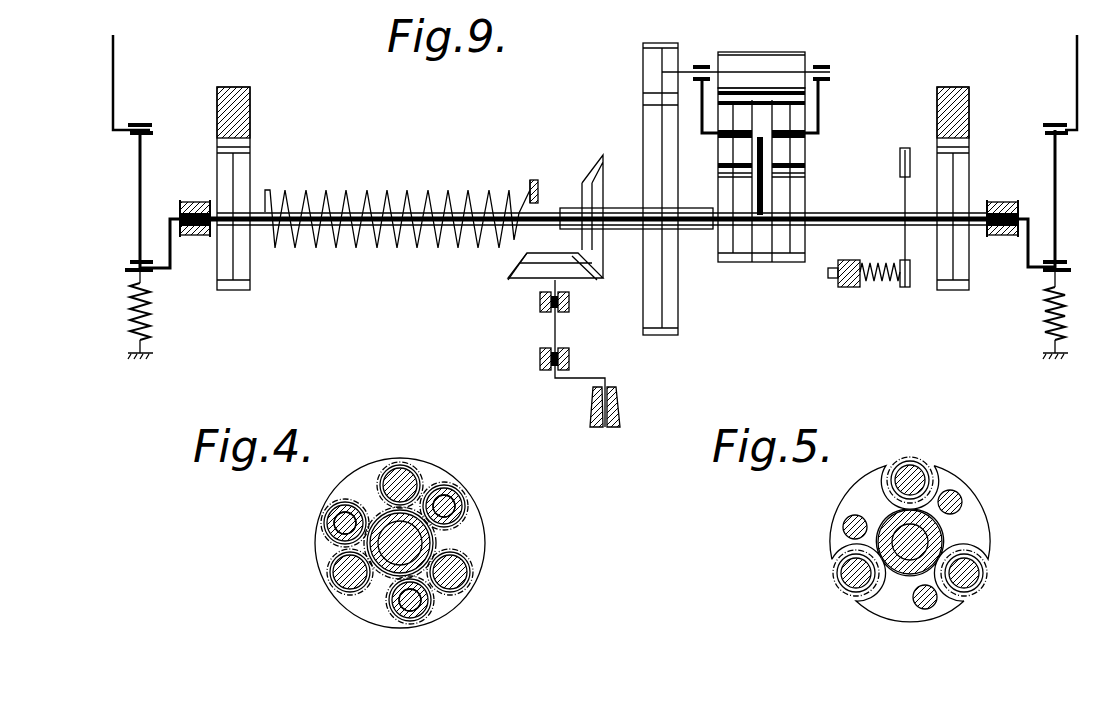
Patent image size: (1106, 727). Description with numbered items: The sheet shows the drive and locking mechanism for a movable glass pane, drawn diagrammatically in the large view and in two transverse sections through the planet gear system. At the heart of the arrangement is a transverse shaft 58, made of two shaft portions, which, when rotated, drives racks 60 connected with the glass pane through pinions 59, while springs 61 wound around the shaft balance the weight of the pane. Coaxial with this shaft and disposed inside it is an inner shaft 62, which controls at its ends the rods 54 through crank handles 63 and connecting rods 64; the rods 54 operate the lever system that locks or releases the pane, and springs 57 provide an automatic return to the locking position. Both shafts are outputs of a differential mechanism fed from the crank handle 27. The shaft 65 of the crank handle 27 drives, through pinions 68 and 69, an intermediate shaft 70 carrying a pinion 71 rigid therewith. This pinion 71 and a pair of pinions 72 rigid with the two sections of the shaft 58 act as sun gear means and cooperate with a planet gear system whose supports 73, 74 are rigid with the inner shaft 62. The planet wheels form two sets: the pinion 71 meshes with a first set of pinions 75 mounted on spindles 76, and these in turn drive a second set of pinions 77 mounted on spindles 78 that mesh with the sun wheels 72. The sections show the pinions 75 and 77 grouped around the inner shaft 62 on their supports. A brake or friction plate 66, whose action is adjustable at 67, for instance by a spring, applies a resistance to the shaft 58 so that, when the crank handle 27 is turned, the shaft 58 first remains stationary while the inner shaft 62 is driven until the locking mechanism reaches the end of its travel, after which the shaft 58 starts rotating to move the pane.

In FIG. 9, the crank handle 27 is at (621, 400).
In FIG. 9, the rod 54 is at (115, 68).
In FIG. 9, the spring 57 is at (152, 318).
In FIG. 9, the transverse shaft 58 is at (500, 195).
In FIG. 9, the pinion 59 is at (250, 150).
In FIG. 9, the rack 60 is at (250, 107).
In FIG. 9, the spring 61 is at (407, 200).
In FIG. 9, the inner shaft 62 is at (554, 212).
In FIG. 4, the inner shaft 62 is at (390, 555).
In FIG. 5, the inner shaft 62 is at (905, 555).
In FIG. 9, the crank handle 63 is at (175, 259).
In FIG. 9, the connecting rod 64 is at (138, 182).
In FIG. 9, the shaft 65 is at (556, 326).
In FIG. 9, the brake or friction plate 66 is at (907, 280).
In FIG. 9, the adjusting means 67 is at (875, 282).
In FIG. 9, the pinion 68 is at (513, 280).
In FIG. 9, the pinion 69 is at (598, 266).
In FIG. 9, the intermediate shaft 70 is at (623, 205).
In FIG. 9, the pinion 71 is at (643, 100).
In FIG. 9, the pinion 72 is at (770, 263).
In FIG. 4, the pinion 72 is at (385, 505).
In FIG. 9, the support 73 is at (758, 200).
In FIG. 5, the support 73 is at (838, 532).
In FIG. 9, the support 74 is at (820, 93).
In FIG. 4, the support 74 is at (470, 543).
In FIG. 9, the planet pinion 75 is at (728, 53).
In FIG. 4, the planet pinion 75 is at (400, 468).
In FIG. 5, the planet pinion 75 is at (910, 465).
In FIG. 9, the spindle 76 is at (797, 72).
In FIG. 9, the planet pinion 77 is at (723, 165).
In FIG. 4, the planet pinion 77 is at (440, 520).
In FIG. 9, the spindle 78 is at (810, 131).
In FIG. 4, the spindle 78 is at (447, 506).
In FIG. 5, the spindle 78 is at (958, 495).